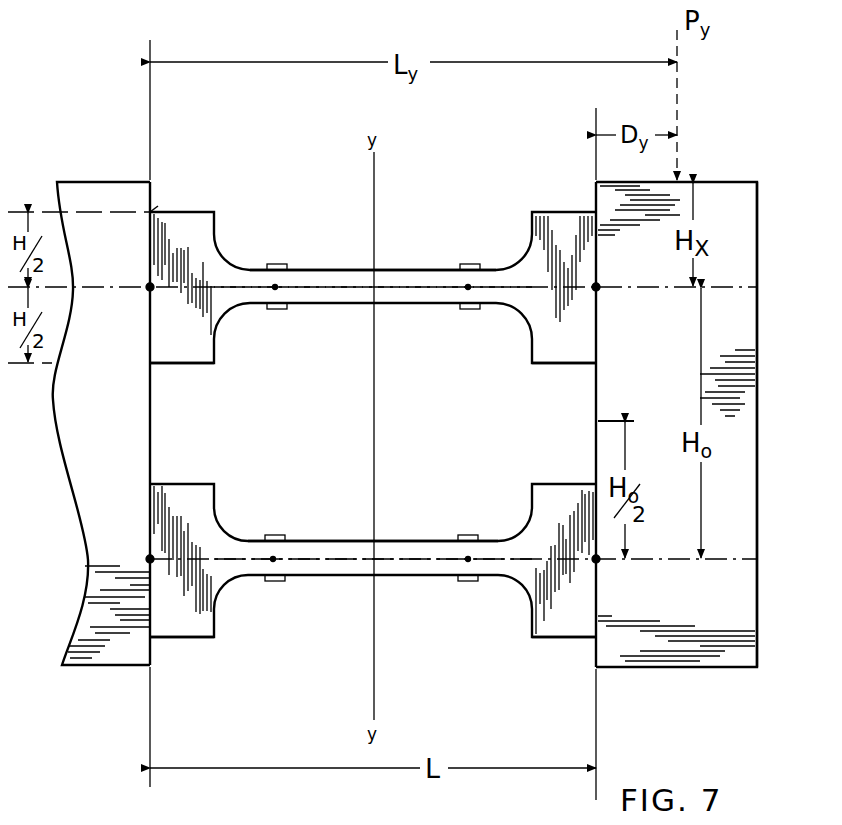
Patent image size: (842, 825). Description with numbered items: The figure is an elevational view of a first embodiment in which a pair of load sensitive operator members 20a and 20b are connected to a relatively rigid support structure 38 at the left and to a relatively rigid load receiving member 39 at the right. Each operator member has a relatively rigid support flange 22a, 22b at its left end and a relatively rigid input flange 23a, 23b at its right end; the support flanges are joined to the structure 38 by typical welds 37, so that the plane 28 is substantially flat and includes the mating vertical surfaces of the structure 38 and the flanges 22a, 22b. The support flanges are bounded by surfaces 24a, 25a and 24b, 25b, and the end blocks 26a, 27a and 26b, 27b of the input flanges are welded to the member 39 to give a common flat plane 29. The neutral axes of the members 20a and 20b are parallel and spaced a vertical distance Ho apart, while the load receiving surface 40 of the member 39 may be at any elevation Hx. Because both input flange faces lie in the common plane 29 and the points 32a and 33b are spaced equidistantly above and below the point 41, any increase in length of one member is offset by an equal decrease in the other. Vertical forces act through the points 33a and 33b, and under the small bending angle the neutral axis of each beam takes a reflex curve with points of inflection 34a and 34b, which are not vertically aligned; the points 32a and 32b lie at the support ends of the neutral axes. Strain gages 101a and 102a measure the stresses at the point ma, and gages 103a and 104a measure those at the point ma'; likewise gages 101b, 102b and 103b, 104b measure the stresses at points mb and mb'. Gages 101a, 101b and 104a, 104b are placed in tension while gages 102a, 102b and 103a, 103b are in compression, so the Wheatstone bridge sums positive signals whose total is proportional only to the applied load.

The support structure 38 is at (105, 190).
The support face 28 is at (148, 418).
The load receiving surface 40 is at (708, 180).
The load receiving member 39 is at (740, 263).
The load input face 29 is at (594, 440).
The point 41 is at (606, 413).
The weld 37 is at (156, 210).
The surface 24a is at (200, 210).
The support flange 22a is at (200, 242).
The input flange 23a is at (540, 236).
The upper right end block 26a is at (556, 210).
The strain gage 101a is at (278, 264).
The strain gage 102a is at (283, 310).
The strain gage 103a is at (488, 225).
The strain gage 104a is at (478, 310).
The point ma is at (300, 312).
The point ma' is at (440, 317).
The point of inflection 34a is at (368, 292).
The point 32a is at (150, 290).
The point 33a is at (600, 290).
The surface 25a is at (205, 366).
The upper right block bottom face 27a is at (570, 366).
The operator member 20a is at (383, 228).
The surface 24b is at (188, 482).
The support flange 22b is at (208, 518).
The input flange 23b is at (540, 516).
The lower right end block 26b is at (553, 486).
The strain gage 101b is at (275, 535).
The strain gage 102b is at (282, 582).
The strain gage 103b is at (507, 508).
The strain gage 104b is at (498, 612).
The point mb is at (303, 539).
The point mb' is at (429, 582).
The point of inflection 34b is at (372, 563).
The point 32b is at (148, 559).
The point 33b is at (600, 562).
The surface 25b is at (198, 640).
The lower right block bottom face 27b is at (548, 640).
The operator member 20b is at (376, 650).